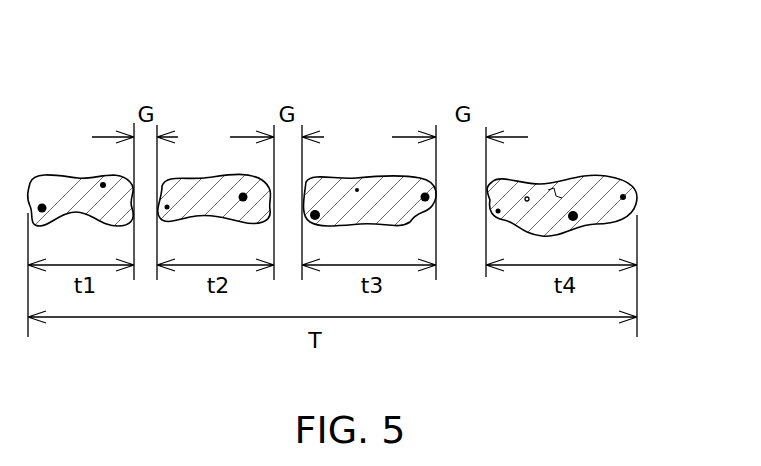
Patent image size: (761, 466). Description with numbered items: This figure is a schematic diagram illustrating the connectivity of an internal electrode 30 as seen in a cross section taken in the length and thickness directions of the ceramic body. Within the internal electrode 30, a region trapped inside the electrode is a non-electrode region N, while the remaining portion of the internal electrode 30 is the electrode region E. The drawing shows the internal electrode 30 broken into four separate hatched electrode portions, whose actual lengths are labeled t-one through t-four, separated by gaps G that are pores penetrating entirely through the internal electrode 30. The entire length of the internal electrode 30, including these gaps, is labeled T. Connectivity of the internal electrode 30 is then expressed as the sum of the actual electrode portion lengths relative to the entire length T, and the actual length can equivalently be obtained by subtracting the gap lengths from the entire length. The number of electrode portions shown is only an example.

The internal electrode 30 is at (633, 203).
The non-electrode region N is at (625, 192).
The electrode region E is at (557, 191).